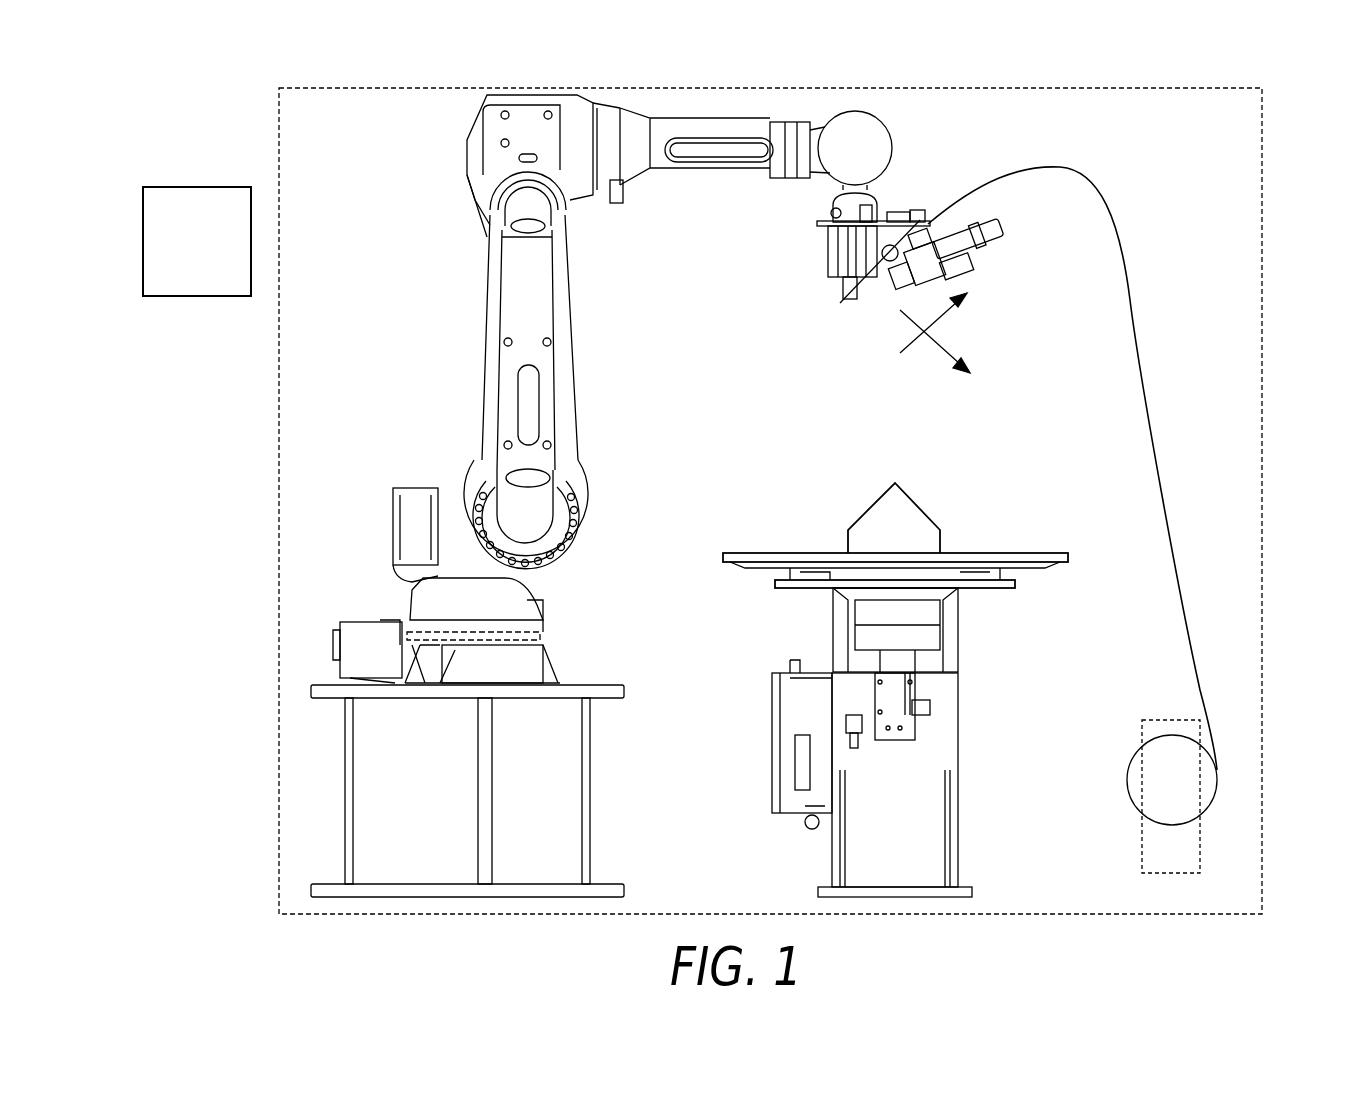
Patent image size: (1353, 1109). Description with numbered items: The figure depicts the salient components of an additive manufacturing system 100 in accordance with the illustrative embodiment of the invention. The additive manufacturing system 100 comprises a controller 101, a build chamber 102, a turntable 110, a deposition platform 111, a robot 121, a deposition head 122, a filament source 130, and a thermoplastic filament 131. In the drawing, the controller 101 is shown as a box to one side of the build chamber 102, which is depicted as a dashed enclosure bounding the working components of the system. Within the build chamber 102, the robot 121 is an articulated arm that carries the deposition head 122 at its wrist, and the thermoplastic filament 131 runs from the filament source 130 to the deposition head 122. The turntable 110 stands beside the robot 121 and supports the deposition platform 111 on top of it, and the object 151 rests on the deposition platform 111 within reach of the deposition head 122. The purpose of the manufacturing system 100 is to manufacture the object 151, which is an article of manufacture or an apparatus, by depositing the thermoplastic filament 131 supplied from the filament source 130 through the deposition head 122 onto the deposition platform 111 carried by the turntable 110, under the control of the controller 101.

The additive manufacturing system 100 is at (180, 148).
The controller 101 is at (143, 213).
The build chamber 102 is at (1265, 118).
The turntable 110 is at (978, 700).
The deposition platform 111 is at (772, 553).
The robot 121 is at (465, 275).
The deposition head 122 is at (825, 253).
The filament source 130 is at (1127, 781).
The thermoplastic filament 131 is at (1140, 381).
The object 151 is at (880, 485).